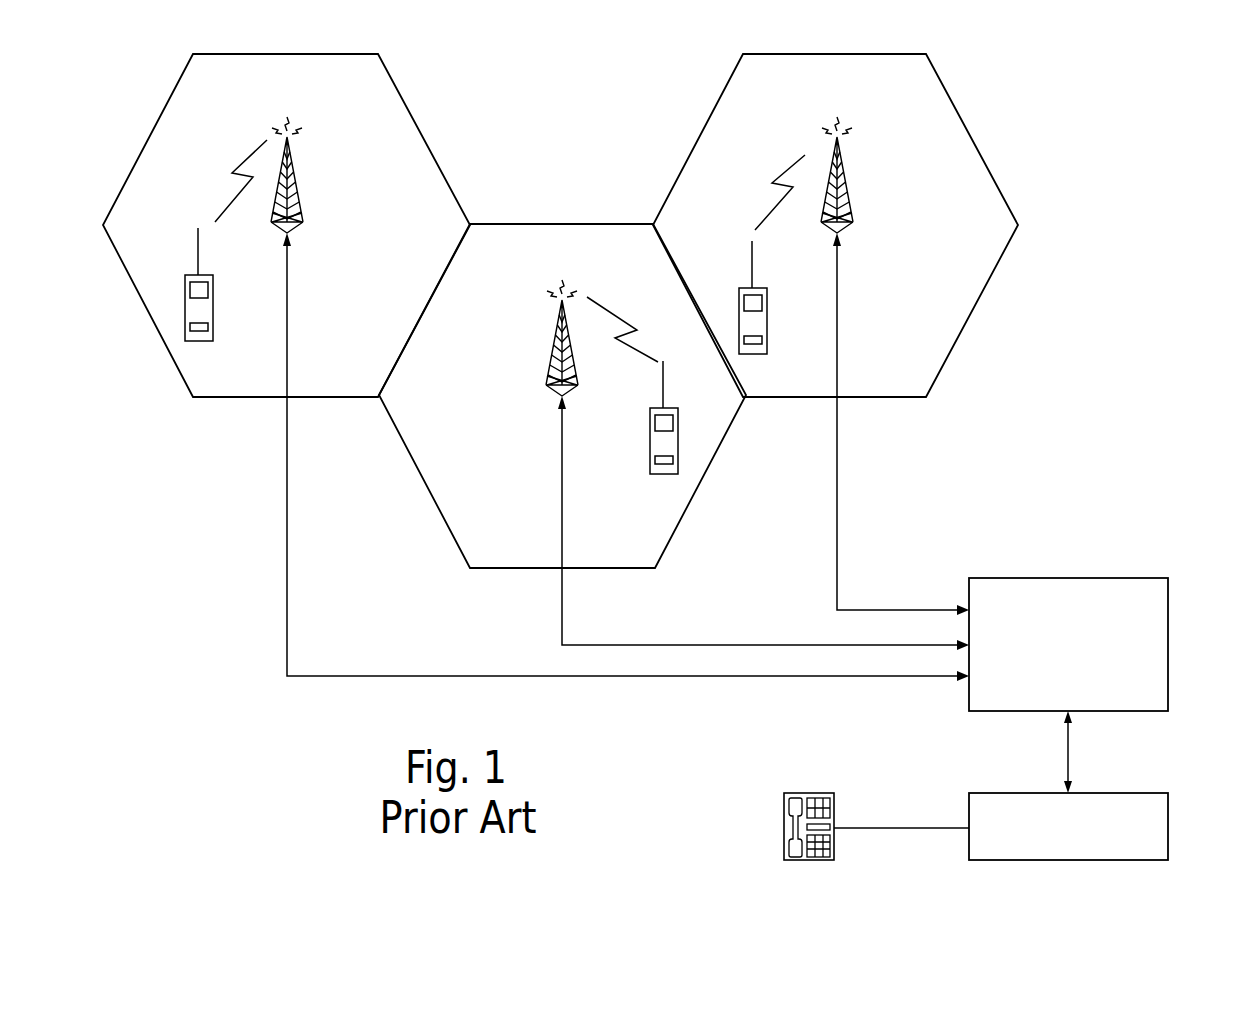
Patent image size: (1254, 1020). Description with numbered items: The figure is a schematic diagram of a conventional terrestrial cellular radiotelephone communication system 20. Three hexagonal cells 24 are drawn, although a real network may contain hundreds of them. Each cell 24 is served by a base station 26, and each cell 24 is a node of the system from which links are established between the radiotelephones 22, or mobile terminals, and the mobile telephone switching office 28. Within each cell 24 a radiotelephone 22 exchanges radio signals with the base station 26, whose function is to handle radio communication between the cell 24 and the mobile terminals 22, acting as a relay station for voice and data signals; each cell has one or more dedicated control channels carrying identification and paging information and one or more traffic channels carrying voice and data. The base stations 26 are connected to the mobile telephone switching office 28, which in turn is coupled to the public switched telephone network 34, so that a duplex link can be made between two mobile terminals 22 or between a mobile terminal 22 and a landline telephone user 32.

The cellular radiotelephone communication system 20 is at (1182, 160).
The radiotelephone 22 is at (213, 313).
The cell 24 is at (173, 360).
The base station 26 is at (311, 178).
The mobile telephone switching office 28 is at (1068, 578).
The landline telephone user 32 is at (784, 828).
The public switched telephone network 34 is at (1170, 827).